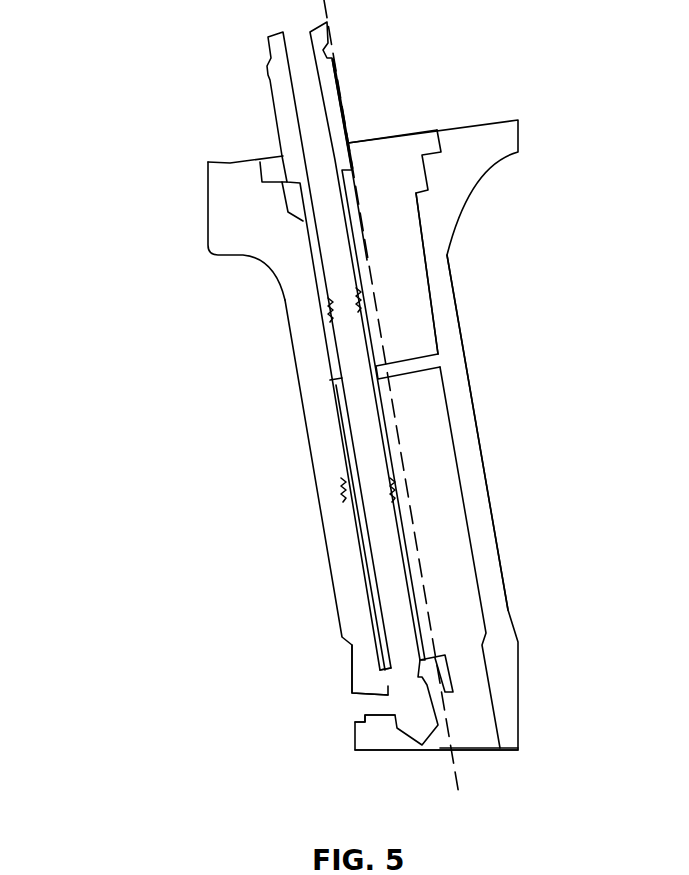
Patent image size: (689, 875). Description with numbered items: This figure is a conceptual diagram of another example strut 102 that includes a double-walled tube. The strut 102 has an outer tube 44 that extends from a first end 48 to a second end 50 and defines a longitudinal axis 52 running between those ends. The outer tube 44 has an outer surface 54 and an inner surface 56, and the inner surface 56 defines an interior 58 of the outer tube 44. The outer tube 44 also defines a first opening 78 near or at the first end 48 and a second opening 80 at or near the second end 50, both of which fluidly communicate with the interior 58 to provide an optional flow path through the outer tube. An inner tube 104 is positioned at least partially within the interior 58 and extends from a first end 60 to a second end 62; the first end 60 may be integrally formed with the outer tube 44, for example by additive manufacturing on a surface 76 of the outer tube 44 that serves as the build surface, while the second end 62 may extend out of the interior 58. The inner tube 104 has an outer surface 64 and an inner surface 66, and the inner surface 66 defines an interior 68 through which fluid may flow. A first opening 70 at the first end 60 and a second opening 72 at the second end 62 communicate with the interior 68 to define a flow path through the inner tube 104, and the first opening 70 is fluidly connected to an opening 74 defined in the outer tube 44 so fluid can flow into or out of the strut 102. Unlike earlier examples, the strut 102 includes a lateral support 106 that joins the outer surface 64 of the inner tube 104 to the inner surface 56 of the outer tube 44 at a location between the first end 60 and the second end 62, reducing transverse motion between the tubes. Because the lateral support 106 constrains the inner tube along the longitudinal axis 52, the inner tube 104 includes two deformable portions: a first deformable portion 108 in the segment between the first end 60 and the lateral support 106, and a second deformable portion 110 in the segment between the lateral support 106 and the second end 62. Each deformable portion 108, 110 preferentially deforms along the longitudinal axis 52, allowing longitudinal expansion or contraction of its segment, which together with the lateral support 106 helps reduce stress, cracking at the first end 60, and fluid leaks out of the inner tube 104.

The strut 102 is at (122, 162).
The second opening 72 is at (297, 36).
The second end 62 is at (278, 97).
The second opening 80 is at (372, 140).
The second end 50 is at (455, 127).
The interior 58 is at (404, 284).
The inner surface 56 is at (437, 337).
The longitudinal axis 52 is at (400, 433).
The outer surface 54 is at (483, 445).
The second deformable portion 110 is at (325, 305).
The lateral support 106 is at (332, 378).
The outer tube 44 is at (312, 442).
The first deformable portion 108 is at (347, 492).
The inner tube 104 is at (362, 533).
The interior 68 is at (393, 523).
The outer surface 64 is at (373, 580).
The inner surface 66 is at (375, 607).
The first end 60 is at (385, 667).
The first opening 70 is at (403, 676).
The surface 76 is at (431, 652).
The opening 74 is at (368, 708).
The first end 48 is at (378, 745).
The first opening 78 is at (477, 745).